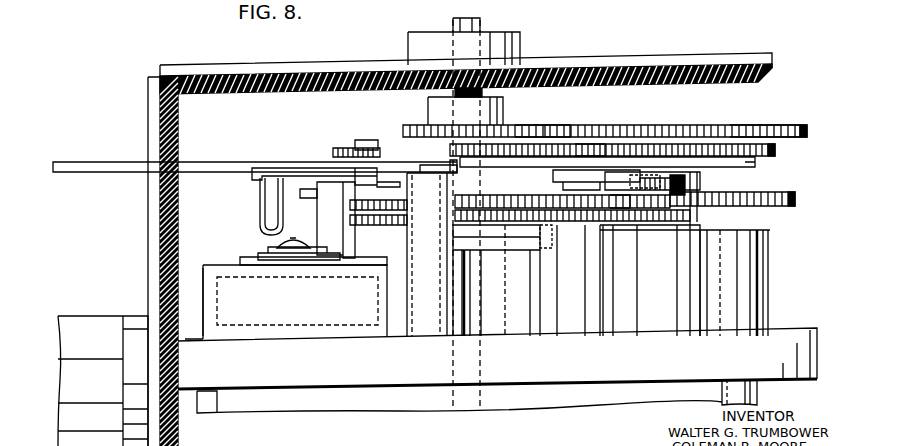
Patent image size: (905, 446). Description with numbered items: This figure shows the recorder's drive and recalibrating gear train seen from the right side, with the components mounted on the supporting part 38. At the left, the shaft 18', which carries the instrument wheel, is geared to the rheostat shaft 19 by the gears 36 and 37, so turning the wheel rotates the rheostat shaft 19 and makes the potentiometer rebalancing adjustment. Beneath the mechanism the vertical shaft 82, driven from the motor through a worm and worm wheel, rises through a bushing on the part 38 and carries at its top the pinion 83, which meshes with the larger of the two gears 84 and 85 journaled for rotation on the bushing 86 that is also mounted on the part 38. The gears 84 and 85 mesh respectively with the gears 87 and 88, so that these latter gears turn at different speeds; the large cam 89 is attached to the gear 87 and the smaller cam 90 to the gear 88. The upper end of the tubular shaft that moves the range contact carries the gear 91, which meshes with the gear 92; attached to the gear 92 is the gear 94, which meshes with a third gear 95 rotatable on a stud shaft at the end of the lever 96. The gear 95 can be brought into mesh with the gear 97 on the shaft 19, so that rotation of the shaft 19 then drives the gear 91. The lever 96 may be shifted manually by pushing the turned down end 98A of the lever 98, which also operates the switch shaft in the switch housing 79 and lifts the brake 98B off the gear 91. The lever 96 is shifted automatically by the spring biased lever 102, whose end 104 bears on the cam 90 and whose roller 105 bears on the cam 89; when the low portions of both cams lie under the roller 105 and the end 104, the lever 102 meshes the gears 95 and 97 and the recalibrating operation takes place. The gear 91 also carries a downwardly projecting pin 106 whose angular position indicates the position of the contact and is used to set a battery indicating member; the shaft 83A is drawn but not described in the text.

The gear 37 is at (338, 68).
The gear 36 is at (158, 200).
The shaft 18' is at (103, 366).
The part 38 is at (408, 373).
The rheostat shaft 19 is at (470, 393).
The bushing 86 is at (558, 322).
The vertical shaft 82 is at (760, 390).
The pinion 83 is at (795, 200).
The shaft 83A is at (770, 298).
The lever 96 is at (757, 163).
The gear 92 is at (778, 149).
The gear 94 is at (752, 118).
The lever 102 is at (700, 180).
The roller 105 is at (652, 185).
The gear 85 is at (622, 218).
The gear 84 is at (590, 146).
The gear 95 is at (552, 126).
The gear 91 is at (522, 126).
The gear 97 is at (412, 125).
The pin 106 is at (400, 148).
The brake 98B is at (355, 148).
The turned down end 98A is at (262, 196).
The lever 98 is at (246, 260).
The switch housing 79 is at (212, 269).
The large cam 89 is at (300, 193).
The gear 87 is at (397, 215).
The gear 88 is at (397, 222).
The smaller cam 90 is at (400, 226).
The end 104 is at (621, 232).